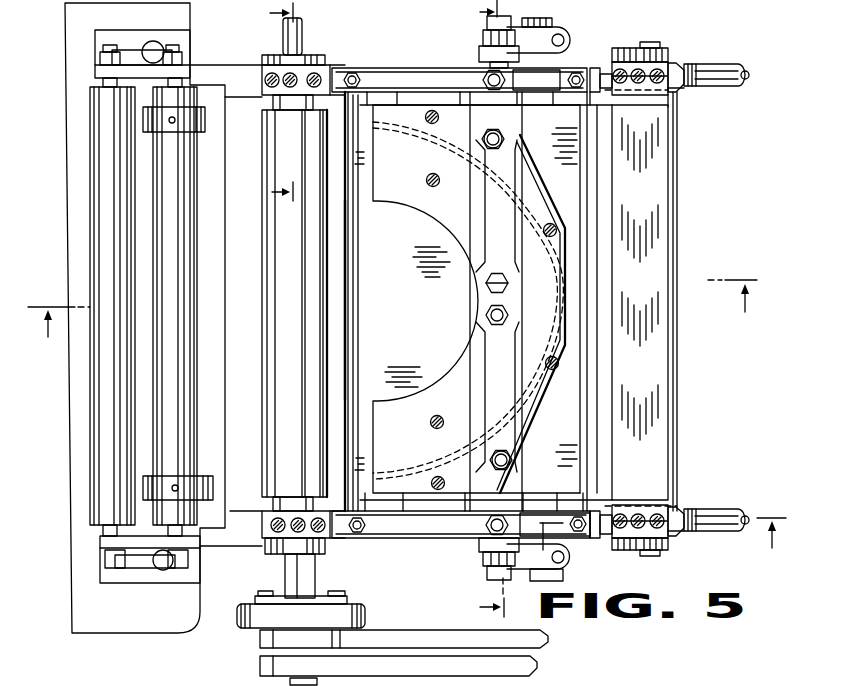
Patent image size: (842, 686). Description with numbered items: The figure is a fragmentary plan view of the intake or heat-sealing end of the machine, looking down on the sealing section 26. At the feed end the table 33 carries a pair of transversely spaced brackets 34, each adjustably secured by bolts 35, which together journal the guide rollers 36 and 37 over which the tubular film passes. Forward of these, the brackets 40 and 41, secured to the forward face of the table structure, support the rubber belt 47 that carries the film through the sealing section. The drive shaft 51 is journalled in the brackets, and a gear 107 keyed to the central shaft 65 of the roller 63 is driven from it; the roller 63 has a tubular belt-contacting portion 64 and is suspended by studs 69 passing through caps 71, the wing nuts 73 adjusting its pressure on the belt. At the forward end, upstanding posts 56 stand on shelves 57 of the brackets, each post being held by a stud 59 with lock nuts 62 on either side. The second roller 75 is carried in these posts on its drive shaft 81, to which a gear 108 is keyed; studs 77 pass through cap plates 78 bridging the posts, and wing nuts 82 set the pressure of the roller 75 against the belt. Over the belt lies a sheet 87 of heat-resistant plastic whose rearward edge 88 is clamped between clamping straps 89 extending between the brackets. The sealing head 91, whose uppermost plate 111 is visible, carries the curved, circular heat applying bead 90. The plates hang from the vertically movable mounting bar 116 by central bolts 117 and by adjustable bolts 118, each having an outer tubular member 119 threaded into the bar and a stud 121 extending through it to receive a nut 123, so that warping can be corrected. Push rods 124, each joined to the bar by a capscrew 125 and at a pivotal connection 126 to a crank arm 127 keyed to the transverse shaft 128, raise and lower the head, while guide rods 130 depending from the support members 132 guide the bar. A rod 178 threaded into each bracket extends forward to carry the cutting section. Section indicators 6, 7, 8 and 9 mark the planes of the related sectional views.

The section line 6- 6 is at (392, 299).
The section line 7- 7 is at (499, 311).
The section line 8- 8 is at (288, 118).
The section line 9- 9 is at (656, 525).
The sealing section 26 is at (682, 209).
The table 33 is at (83, 403).
The brackets 34 is at (128, 72).
The bolts 35 is at (154, 46).
The guide roller 36 is at (112, 183).
The guide roller 37 is at (163, 218).
The bracket 40 is at (250, 541).
The bracket 41 is at (222, 65).
The rubber belt 47 is at (337, 316).
The drive shaft 51 is at (310, 32).
The post 56 is at (672, 64).
The shelf 57 is at (680, 93).
The stud 59 is at (697, 67).
The lock nuts 62 is at (667, 97).
The roller 63 is at (278, 357).
The tubular belt-contacting portion 64 is at (290, 383).
The central shaft 65 is at (297, 110).
The stud 69 is at (295, 97).
The cap 71 is at (264, 76).
The wing nut 73 is at (331, 74).
The second roller 75 is at (680, 404).
The stud 77 is at (642, 72).
The cap plate 78 is at (657, 184).
The drive shaft 81 is at (655, 47).
The wing nut 82 is at (643, 80).
The sheet 87 is at (447, 337).
The rearward edge 88 is at (355, 382).
The clamping straps 89 is at (358, 357).
The heat applying bead 90 is at (418, 130).
The sealing head 91 is at (474, 445).
The gear 107 is at (277, 62).
The gear 108 is at (612, 83).
The plate 111 is at (463, 363).
The mounting bar 116 is at (497, 396).
The bolts 117 is at (500, 283).
The adjustable bolts 118 is at (509, 130).
The outer tubular member 119 is at (404, 657).
The stud 121 is at (474, 148).
The nut 123 is at (492, 157).
The push rods 124 is at (480, 54).
The capscrew 125 is at (484, 38).
The pivotal connection 126 is at (488, 22).
The crank arm 127 is at (548, 32).
The transverse shaft 128 is at (545, 580).
The guide rods 130 is at (481, 80).
The support member 132 is at (461, 303).
The rod 178 is at (748, 76).